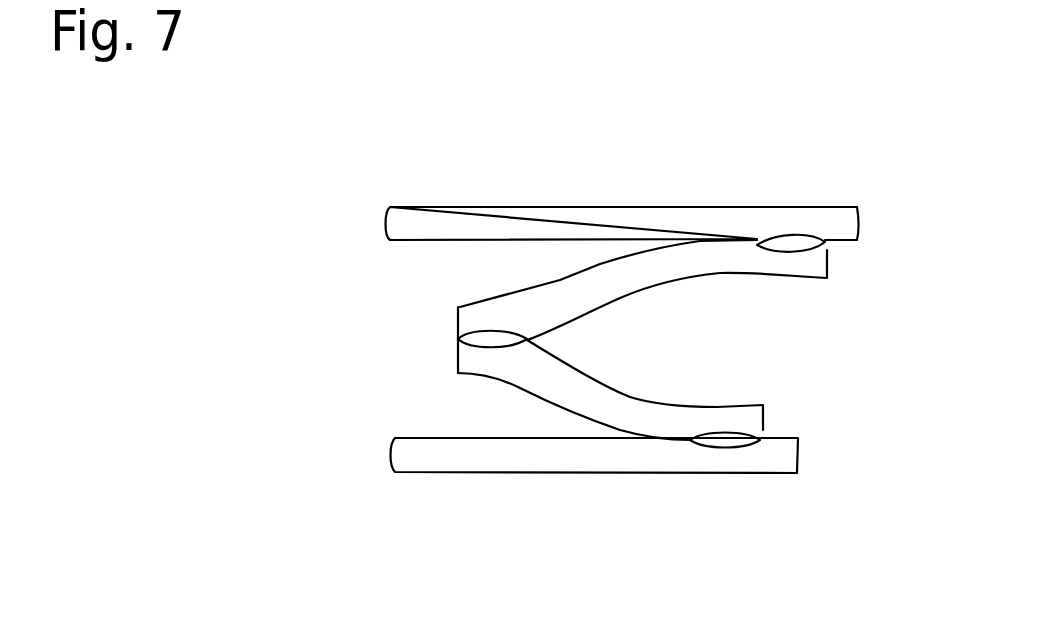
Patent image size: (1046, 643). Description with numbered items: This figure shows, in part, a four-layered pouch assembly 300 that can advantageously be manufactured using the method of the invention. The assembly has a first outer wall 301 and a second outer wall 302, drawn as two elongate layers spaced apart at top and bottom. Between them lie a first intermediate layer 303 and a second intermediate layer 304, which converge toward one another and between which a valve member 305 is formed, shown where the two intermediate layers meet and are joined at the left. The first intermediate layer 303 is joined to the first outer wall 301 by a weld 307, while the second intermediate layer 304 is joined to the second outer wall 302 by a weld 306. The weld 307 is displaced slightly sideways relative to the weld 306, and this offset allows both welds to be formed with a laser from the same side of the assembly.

The four-layered pouch assembly 300 is at (222, 237).
The first outer wall 301 is at (612, 207).
The second outer wall 302 is at (578, 456).
The first intermediate layer 303 is at (670, 268).
The second intermediate layer 304 is at (671, 419).
The valve member 305 is at (445, 337).
The weld 306 is at (733, 450).
The weld 307 is at (803, 234).